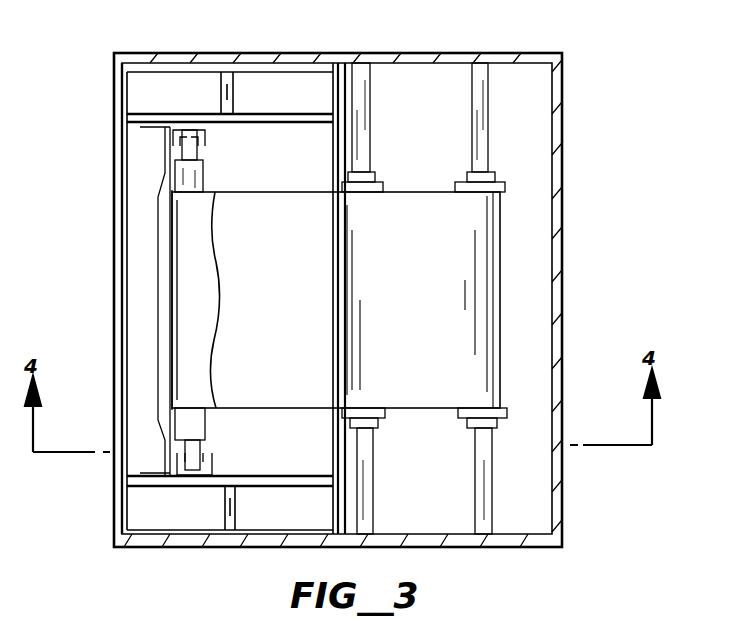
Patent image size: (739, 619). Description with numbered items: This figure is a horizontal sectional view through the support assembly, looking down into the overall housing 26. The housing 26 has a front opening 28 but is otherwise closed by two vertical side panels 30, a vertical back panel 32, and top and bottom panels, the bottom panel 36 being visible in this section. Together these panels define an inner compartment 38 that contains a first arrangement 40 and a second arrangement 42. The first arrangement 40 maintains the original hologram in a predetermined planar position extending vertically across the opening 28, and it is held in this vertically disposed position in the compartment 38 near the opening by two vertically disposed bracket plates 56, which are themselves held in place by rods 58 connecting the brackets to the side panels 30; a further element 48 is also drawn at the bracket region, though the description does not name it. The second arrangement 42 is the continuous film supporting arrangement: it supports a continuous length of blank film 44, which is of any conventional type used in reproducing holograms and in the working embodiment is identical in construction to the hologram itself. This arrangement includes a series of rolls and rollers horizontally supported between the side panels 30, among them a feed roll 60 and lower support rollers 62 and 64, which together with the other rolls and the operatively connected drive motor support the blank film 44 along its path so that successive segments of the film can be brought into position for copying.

The housing 26 is at (571, 110).
The front opening 28 is at (116, 340).
The vertical side panels 30 is at (423, 52).
The vertical back panel 32 is at (557, 258).
The bottom panel 36 is at (535, 497).
The inner compartment 38 is at (138, 410).
The first arrangement 40 is at (150, 259).
The second arrangement 42 is at (437, 450).
The film 44 is at (488, 297).
The bracket 48 is at (166, 152).
The bracket plates 56 is at (276, 118).
The rods 58 is at (233, 92).
The feed roll 60 is at (500, 183).
The lower support roller 62 is at (376, 181).
The lower support roller 64 is at (203, 181).